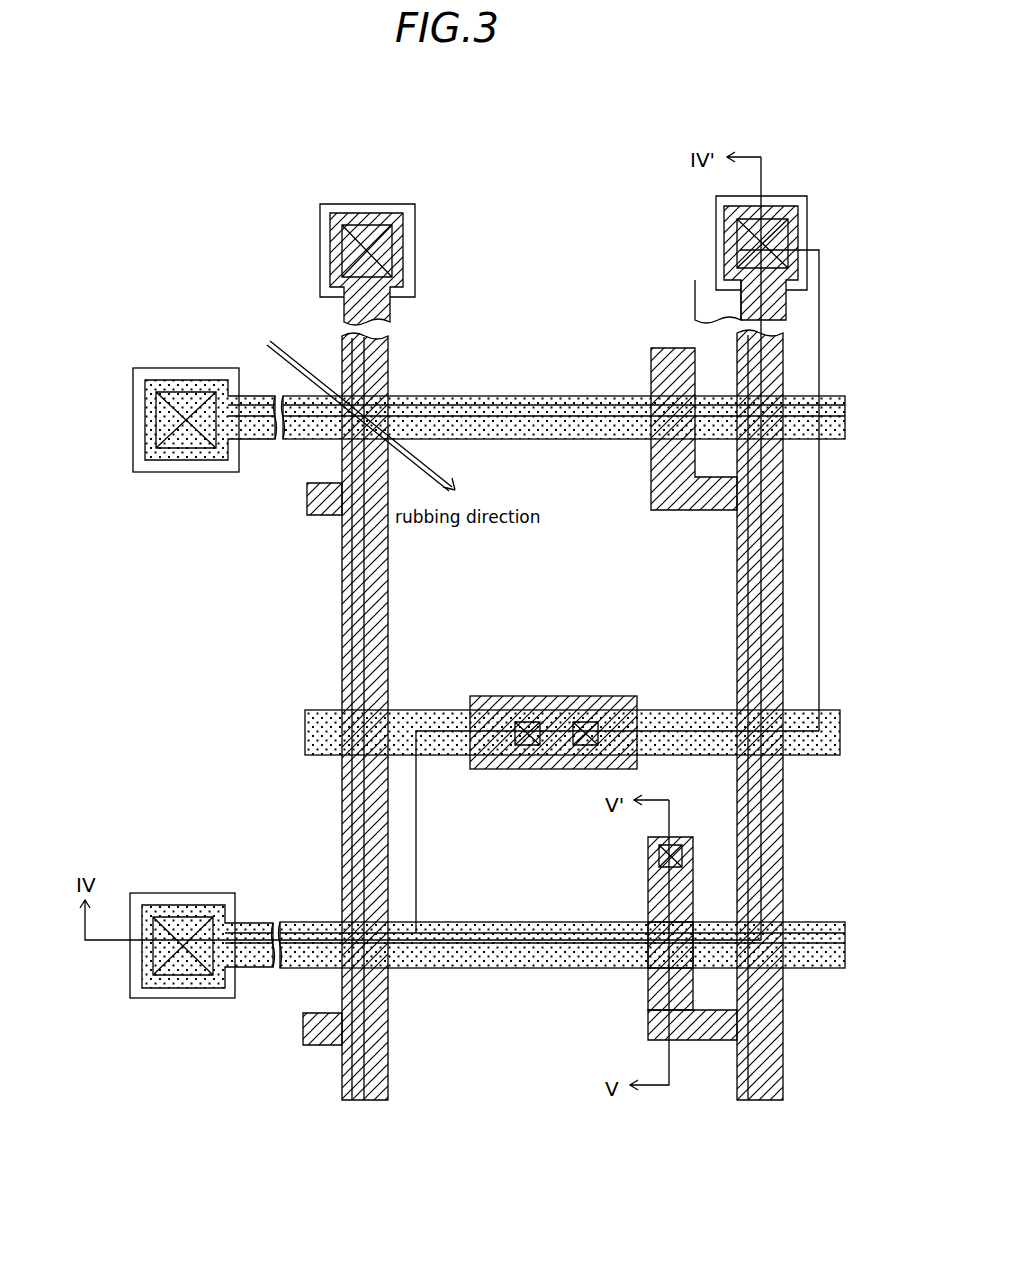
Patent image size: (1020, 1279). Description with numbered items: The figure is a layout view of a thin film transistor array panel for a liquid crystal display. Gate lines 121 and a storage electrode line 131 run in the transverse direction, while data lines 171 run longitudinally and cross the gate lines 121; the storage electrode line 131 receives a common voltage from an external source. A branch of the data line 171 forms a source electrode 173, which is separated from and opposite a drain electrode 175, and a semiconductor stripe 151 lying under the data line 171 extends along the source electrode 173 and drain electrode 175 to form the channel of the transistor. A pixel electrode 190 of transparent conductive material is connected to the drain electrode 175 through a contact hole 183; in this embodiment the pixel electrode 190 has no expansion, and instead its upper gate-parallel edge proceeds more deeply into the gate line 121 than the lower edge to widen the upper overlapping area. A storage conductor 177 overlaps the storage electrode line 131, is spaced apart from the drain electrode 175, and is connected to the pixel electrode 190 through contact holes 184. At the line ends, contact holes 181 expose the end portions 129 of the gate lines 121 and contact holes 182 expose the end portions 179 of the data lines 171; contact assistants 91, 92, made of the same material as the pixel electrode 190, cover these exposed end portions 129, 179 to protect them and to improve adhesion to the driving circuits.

The gate line 121 is at (587, 440).
The end portion of gate line 129 is at (211, 446).
The storage electrode line 131 is at (682, 711).
The semiconductor stripe 151 is at (650, 968).
The data line 171 is at (342, 573).
The source electrode 173 is at (648, 1038).
The drain electrode 175 is at (648, 892).
The storage conductor 177 is at (494, 696).
The end portion of data line 179 is at (800, 266).
The contact hole 181 is at (156, 420).
The contact hole 182 is at (740, 248).
The contact hole 183 is at (660, 856).
The contact hole 184 is at (581, 745).
The pixel electrode 190 is at (482, 922).
The contact assistant 91 is at (148, 462).
The contact assistant 92 is at (799, 220).